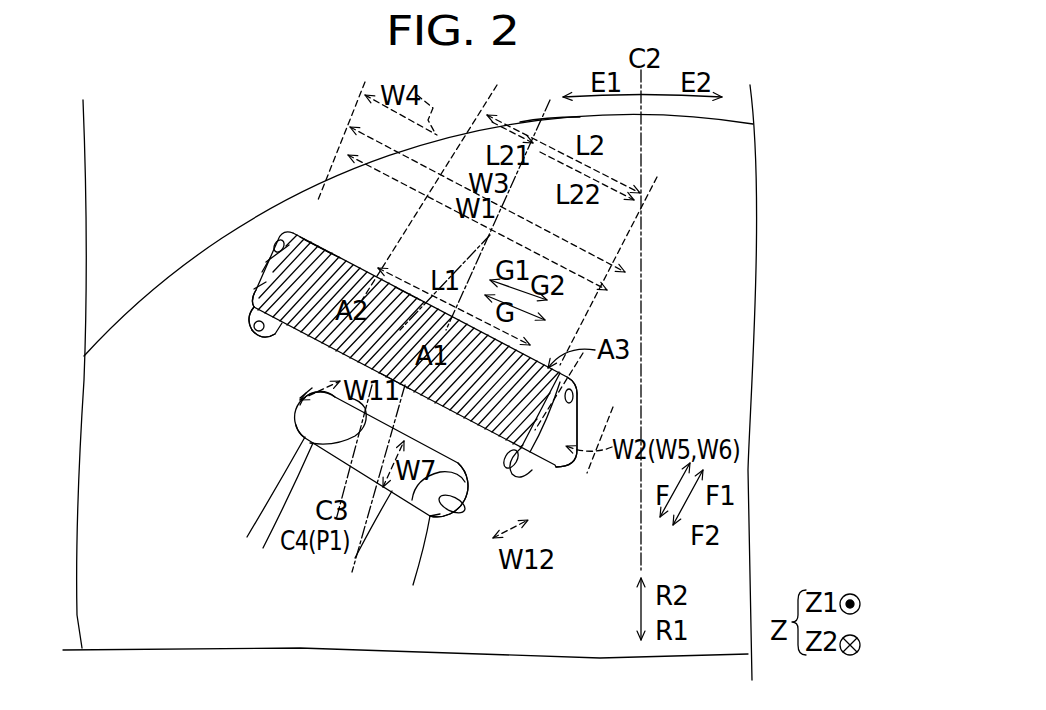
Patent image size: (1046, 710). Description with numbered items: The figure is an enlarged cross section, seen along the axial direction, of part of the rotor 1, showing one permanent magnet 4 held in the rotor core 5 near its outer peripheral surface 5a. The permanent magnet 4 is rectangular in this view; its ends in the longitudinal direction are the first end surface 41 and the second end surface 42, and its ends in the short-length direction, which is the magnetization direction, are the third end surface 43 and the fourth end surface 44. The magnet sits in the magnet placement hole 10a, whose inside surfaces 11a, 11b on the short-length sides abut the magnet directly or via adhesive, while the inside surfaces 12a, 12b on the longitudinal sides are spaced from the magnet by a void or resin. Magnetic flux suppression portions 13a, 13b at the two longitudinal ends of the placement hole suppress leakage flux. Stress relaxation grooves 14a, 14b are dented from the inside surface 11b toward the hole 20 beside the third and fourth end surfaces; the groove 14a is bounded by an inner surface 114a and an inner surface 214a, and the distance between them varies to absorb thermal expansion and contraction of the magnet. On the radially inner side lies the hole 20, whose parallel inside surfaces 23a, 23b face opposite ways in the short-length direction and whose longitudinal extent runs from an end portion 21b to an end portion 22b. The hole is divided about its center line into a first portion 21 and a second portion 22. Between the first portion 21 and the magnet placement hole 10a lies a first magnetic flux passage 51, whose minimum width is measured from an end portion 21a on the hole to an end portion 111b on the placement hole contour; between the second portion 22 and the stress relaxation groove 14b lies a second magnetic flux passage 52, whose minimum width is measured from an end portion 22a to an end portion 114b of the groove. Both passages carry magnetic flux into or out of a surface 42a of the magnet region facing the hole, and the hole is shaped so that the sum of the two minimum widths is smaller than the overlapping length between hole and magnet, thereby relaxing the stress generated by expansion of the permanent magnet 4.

The rotor 1 is at (236, 94).
The permanent magnet 4 is at (282, 250).
The rotor core 5 is at (330, 180).
The outer peripheral surface 5a is at (560, 119).
The magnet placement hole 10a is at (265, 283).
The inside surface 11a is at (315, 243).
The inside surface 11b is at (398, 387).
The inside surface 12a is at (277, 247).
The inside surface 12b is at (570, 386).
The magnetic flux suppression portion 13a is at (266, 268).
The magnetic flux suppression portion 13b is at (562, 454).
The stress relaxation groove 14a is at (170, 330).
The stress relaxation groove 14b is at (524, 468).
The hole 20 is at (262, 512).
The first portion 21 is at (307, 443).
The end portion 21a is at (298, 410).
The end portion 21b is at (302, 437).
The second portion 22 is at (445, 510).
The end portion 22a is at (428, 512).
The end portion 22b is at (441, 510).
The inside surface 23a is at (276, 512).
The inside surface 23b is at (358, 540).
The first end surface 41 is at (324, 181).
The second end surface 42 is at (437, 425).
The surface 42a is at (408, 290).
The third end surface 43 is at (258, 297).
The fourth end surface 44 is at (578, 402).
The first magnetic flux passage 51 is at (300, 392).
The second magnetic flux passage 52 is at (458, 512).
The end portion 111b is at (277, 334).
The inner surface 114a is at (252, 334).
The end portion 114b is at (518, 468).
The inner surface 214a is at (267, 337).